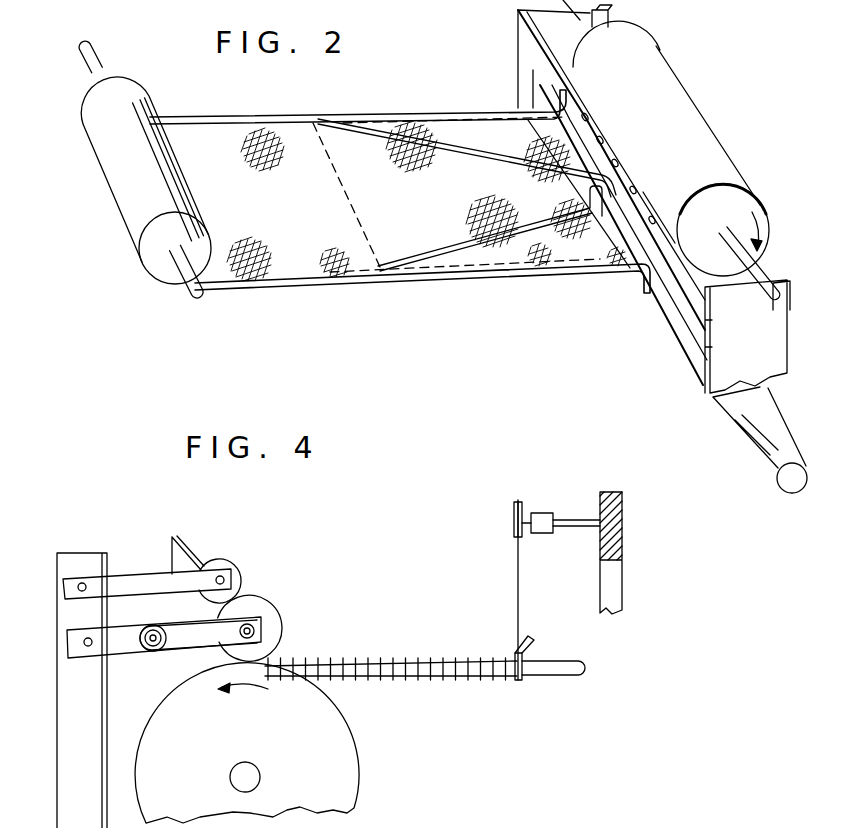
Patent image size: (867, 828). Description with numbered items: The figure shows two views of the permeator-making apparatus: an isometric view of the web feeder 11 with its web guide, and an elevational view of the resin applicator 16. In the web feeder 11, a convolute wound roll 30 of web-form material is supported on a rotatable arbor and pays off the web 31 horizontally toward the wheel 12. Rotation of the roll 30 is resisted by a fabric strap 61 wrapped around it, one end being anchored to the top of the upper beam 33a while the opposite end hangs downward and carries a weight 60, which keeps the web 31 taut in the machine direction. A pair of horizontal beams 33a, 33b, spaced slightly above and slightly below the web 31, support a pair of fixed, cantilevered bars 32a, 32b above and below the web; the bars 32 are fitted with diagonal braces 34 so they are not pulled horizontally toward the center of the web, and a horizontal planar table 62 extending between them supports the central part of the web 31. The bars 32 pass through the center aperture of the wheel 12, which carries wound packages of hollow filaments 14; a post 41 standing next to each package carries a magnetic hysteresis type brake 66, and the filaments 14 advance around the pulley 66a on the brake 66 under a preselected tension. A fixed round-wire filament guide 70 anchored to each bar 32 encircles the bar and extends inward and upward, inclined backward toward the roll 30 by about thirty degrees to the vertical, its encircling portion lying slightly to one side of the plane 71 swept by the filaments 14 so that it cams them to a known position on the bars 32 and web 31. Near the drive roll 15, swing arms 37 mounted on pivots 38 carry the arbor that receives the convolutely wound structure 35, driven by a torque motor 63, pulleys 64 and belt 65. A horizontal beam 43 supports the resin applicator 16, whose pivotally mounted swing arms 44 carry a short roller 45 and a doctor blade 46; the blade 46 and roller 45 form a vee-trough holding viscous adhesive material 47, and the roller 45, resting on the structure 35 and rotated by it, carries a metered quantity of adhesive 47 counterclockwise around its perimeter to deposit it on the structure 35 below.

In FIG. 2, the web feeder 11 is at (692, 90).
In FIG. 4, the wheel 12 is at (622, 538).
In FIG. 4, the hollow filaments 14 is at (383, 660).
In FIG. 4, the drive roll 15 is at (214, 746).
In FIG. 4, the resin applicator 16 is at (203, 532).
In FIG. 2, the convolute wound roll 30 is at (736, 210).
In FIG. 2, the web 31 is at (312, 190).
In FIG. 4, the web 31 is at (475, 660).
In FIG. 4, the guide bars 32 is at (567, 664).
In FIG. 2, the upper guide bar 32a is at (387, 113).
In FIG. 2, the lower guide bar 32b is at (474, 273).
In FIG. 2, the upper horizontal beam 33a is at (642, 220).
In FIG. 2, the lower horizontal beam 33b is at (670, 323).
In FIG. 2, the diagonal braces 34 is at (471, 240).
In FIG. 2, the convolutely wound structure 35 is at (137, 101).
In FIG. 4, the convolutely wound structure 35 is at (281, 614).
In FIG. 4, the swing arms 37 is at (187, 633).
In FIG. 4, the pivots 38 is at (85, 644).
In FIG. 4, the post 41 is at (573, 528).
In FIG. 4, the horizontal beam 43 is at (83, 583).
In FIG. 4, the swing arms 44 is at (133, 574).
In FIG. 4, the roller 45 is at (240, 581).
In FIG. 4, the doctor blade 46 is at (172, 537).
In FIG. 4, the viscous adhesive material 47 is at (207, 558).
In FIG. 2, the weight 60 is at (790, 487).
In FIG. 2, the fabric strap 61 is at (770, 258).
In FIG. 2, the table 62 is at (353, 208).
In FIG. 4, the torque motor 63 is at (141, 633).
In FIG. 4, the pulleys 64 is at (152, 651).
In FIG. 4, the belt 65 is at (180, 647).
In FIG. 4, the magnetic hysteresis type brake 66 is at (552, 503).
In FIG. 4, the pulley 66a is at (514, 530).
In FIG. 4, the filament guide 70 is at (531, 641).
In FIG. 4, the plane 71 is at (517, 585).